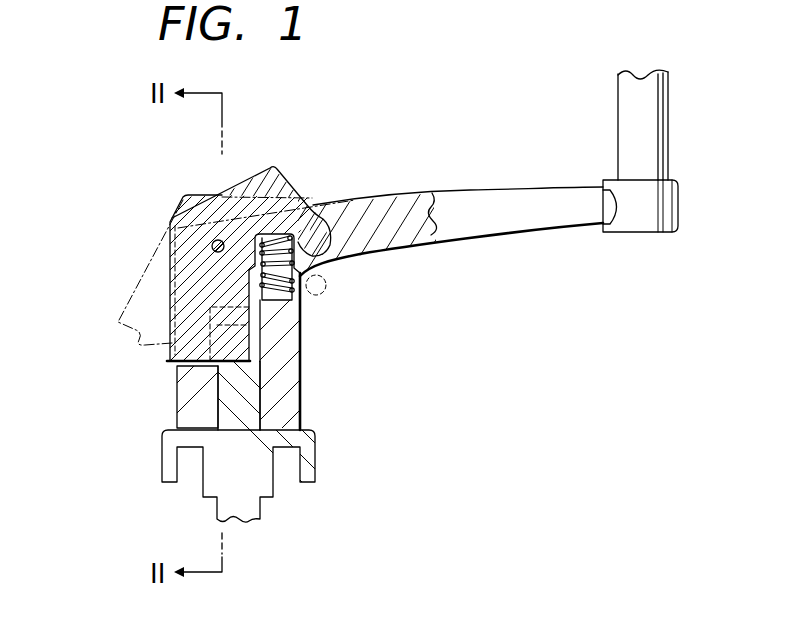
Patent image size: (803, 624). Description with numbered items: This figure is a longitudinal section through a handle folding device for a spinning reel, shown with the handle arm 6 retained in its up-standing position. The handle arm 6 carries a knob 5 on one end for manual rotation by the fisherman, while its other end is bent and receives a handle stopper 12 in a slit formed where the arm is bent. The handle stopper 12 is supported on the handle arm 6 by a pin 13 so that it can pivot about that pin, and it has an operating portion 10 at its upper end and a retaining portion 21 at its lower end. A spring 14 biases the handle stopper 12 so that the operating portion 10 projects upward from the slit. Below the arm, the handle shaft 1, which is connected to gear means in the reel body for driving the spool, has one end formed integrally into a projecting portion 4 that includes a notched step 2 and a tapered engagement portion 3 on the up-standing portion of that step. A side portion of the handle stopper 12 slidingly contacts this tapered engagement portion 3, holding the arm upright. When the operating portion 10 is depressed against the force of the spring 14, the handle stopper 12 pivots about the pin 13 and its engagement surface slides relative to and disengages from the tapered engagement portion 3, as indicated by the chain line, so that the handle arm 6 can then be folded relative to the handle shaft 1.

The handle shaft 1 is at (247, 510).
The notched step 2 is at (247, 371).
The tapered engagement portion 3 is at (258, 343).
The projecting portion 4 is at (240, 403).
The knob 5 is at (665, 138).
The handle arm 6 is at (470, 205).
The operating portion 10 is at (280, 173).
The handle stopper 12 is at (193, 280).
The pin 13 is at (217, 240).
The spring 14 is at (323, 289).
The retaining portion 21 is at (143, 356).